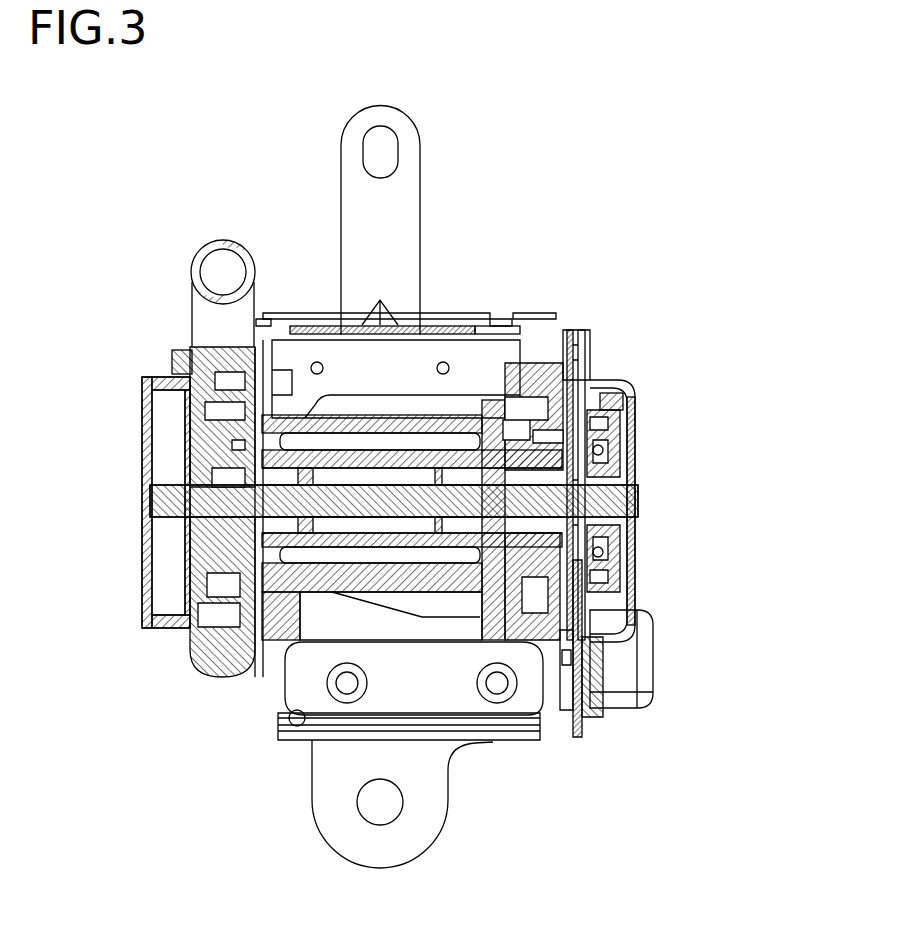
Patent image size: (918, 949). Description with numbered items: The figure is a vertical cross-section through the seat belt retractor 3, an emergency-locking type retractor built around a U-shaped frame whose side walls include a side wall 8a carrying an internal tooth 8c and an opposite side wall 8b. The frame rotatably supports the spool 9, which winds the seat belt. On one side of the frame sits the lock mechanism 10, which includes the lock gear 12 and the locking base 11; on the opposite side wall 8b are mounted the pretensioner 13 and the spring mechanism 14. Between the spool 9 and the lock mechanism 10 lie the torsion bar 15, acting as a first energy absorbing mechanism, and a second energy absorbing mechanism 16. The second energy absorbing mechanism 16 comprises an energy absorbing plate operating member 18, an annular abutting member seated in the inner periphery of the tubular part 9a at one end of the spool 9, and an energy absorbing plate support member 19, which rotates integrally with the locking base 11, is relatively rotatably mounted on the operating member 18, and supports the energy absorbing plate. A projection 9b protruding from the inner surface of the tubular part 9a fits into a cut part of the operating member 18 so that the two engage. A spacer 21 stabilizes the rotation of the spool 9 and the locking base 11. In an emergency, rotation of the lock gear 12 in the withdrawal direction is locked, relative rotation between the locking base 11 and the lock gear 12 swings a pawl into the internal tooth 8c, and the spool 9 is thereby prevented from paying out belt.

The seat belt retractor 3 is at (462, 158).
The side wall 8a is at (578, 740).
The housing wall 8b is at (258, 662).
The internal tooth 8c is at (623, 400).
The spool 9 is at (466, 400).
The tubular part 9a is at (562, 698).
The projection 9b is at (506, 695).
The lock mechanism 10 is at (650, 485).
The locking base 11 is at (632, 576).
The lock gear 12 is at (603, 360).
The pretensioner 13 is at (197, 258).
The spring mechanism 14 is at (158, 395).
The torsion bar 15 is at (405, 500).
The second energy absorbing mechanism 16 is at (598, 252).
The energy absorbing plate operating member 18 is at (568, 355).
The energy absorbing plate support member 19 is at (580, 360).
The spacer 21 is at (620, 688).